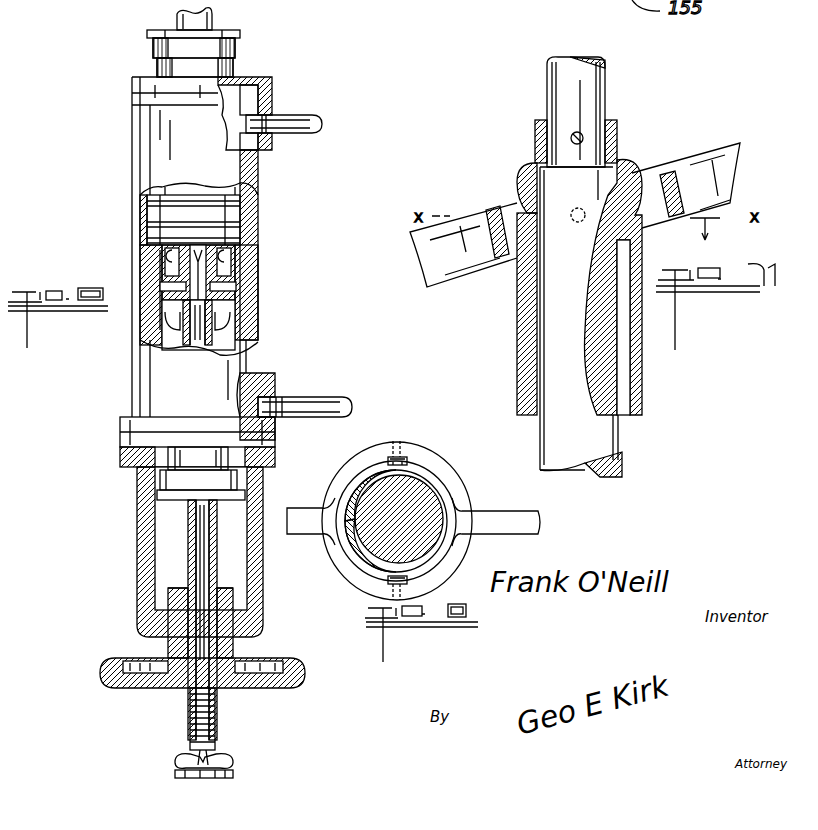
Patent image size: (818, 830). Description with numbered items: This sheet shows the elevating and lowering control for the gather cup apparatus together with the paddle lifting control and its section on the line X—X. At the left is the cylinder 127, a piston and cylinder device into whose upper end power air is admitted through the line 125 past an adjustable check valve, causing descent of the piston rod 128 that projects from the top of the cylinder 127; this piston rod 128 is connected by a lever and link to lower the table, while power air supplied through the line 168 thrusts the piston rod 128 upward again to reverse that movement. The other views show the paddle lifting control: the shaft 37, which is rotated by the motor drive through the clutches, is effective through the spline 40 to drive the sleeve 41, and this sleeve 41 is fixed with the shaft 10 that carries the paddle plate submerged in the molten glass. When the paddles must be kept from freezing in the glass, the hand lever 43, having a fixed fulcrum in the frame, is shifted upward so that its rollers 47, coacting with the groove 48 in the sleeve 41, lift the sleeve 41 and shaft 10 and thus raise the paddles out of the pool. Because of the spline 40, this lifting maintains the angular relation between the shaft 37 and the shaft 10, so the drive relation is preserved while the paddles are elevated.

In FIG. 10, the shaft 10 is at (606, 104).
In FIG. 9, the shaft 37 is at (440, 546).
In FIG. 10, the shaft 37 is at (592, 450).
In FIG. 10, the spline 40 is at (629, 389).
In FIG. 10, the sleeve 41 is at (645, 376).
In FIG. 9, the hand lever 43 is at (322, 508).
In FIG. 10, the hand lever 43 is at (432, 290).
In FIG. 9, the rollers 47 is at (407, 461).
In FIG. 10, the rollers 47 is at (580, 223).
In FIG. 9, the groove 48 is at (452, 496).
In FIG. 10, the groove 48 is at (636, 207).
In FIG. 8, the line 125 is at (300, 112).
In FIG. 8, the cylinder 127 is at (258, 254).
In FIG. 8, the piston rod 128 is at (213, 21).
In FIG. 8, the line 168 is at (330, 374).